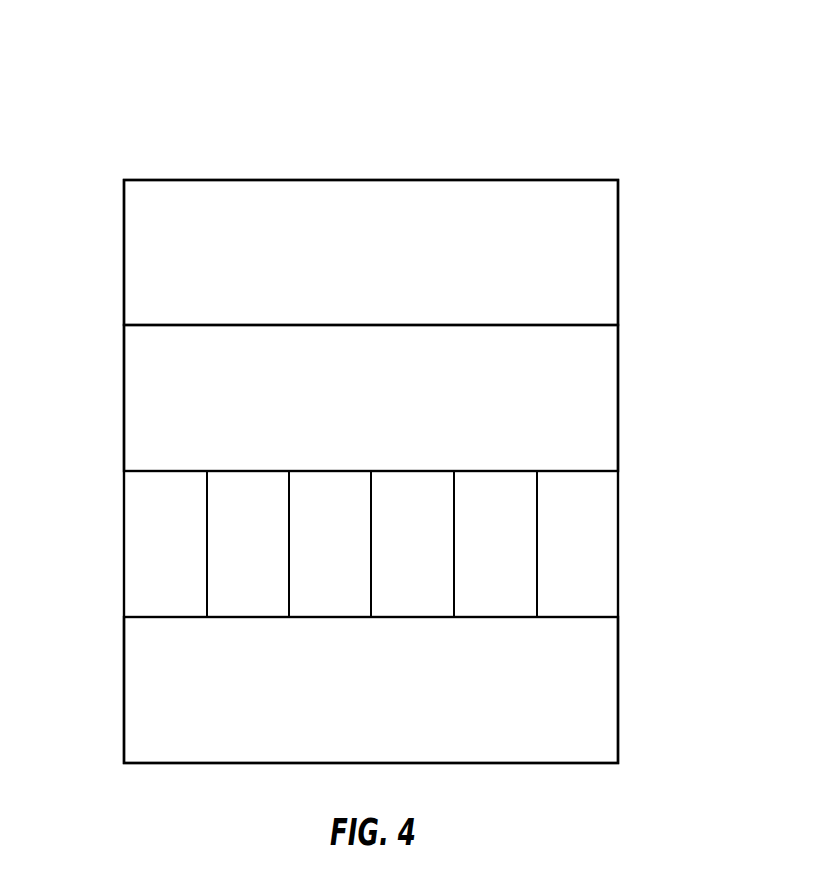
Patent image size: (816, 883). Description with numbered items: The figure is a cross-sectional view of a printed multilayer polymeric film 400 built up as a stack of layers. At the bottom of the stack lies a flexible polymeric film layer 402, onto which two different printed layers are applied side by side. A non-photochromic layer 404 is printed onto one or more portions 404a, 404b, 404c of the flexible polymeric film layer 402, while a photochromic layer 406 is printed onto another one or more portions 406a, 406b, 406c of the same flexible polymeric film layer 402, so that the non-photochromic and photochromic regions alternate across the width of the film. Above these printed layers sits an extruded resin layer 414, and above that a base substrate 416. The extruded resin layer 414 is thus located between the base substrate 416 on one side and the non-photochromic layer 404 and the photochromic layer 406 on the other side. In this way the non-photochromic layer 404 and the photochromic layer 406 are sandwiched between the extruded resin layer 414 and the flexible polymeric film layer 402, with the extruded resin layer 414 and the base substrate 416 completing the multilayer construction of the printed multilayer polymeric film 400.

The printed multilayer polymeric film 400 is at (117, 69).
The flexible polymeric film layer 402 is at (618, 690).
The non-photochromic layer 404 is at (332, 507).
The photochromic layer 406 is at (248, 545).
The portion of the flexible polymeric film layer 404a is at (164, 631).
The portion of the flexible polymeric film layer 406a is at (247, 631).
The portion of the flexible polymeric film layer 404b is at (329, 631).
The portion of the flexible polymeric film layer 406b is at (413, 631).
The portion of the flexible polymeric film layer 404c is at (495, 631).
The portion of the flexible polymeric film layer 406c is at (571, 631).
The extruded resin layer 414 is at (618, 398).
The base substrate 416 is at (618, 253).